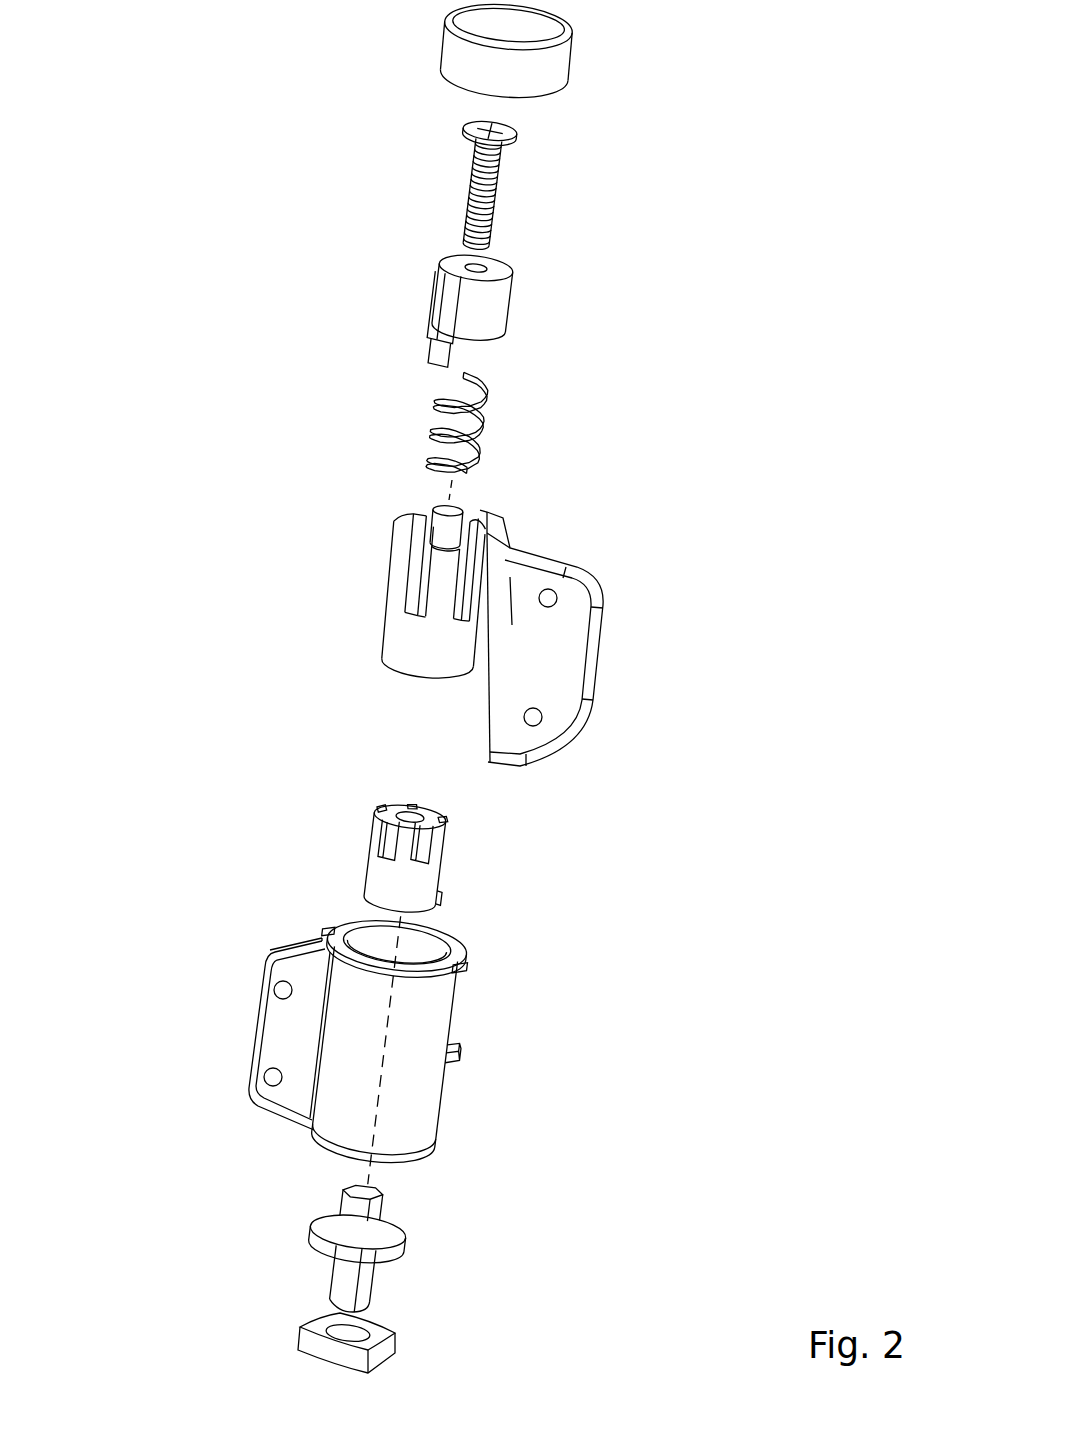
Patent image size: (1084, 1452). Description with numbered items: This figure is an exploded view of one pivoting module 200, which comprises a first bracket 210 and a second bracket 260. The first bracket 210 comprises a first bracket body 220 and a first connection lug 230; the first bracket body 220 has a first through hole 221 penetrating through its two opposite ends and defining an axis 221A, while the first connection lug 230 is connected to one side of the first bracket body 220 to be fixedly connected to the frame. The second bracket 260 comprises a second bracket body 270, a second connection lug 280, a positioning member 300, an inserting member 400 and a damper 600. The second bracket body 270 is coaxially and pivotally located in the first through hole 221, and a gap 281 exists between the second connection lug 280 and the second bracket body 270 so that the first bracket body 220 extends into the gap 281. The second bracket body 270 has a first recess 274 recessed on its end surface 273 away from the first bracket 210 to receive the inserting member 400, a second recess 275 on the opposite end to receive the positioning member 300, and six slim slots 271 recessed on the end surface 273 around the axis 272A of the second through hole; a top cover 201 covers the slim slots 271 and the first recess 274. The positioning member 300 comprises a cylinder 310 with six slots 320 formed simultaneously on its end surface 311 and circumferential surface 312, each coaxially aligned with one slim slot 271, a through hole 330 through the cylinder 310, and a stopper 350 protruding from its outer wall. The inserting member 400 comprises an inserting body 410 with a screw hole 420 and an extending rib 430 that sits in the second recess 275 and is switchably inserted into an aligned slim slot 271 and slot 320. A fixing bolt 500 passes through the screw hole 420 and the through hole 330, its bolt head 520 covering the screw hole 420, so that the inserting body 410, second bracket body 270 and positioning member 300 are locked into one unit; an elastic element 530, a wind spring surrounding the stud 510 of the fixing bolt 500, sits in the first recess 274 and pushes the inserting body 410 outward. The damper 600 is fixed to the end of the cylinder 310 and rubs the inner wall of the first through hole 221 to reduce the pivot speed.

The pivoting module 200 is at (160, 54).
The top cover 201 is at (450, 53).
The fixing bolt 500 is at (424, 182).
The bolt head 520 is at (460, 132).
The stud 510 is at (388, 147).
The inserting member 400 is at (563, 305).
The inserting body 410 is at (497, 291).
The screw hole 420 is at (489, 256).
The extending rib 430 is at (463, 336).
The elastic element 530 is at (440, 410).
The second bracket 260 is at (524, 702).
The second bracket body 270 is at (491, 600).
The slim slots 271 is at (449, 605).
The axis of the second through hole 272A is at (452, 498).
The end surface 273 is at (478, 522).
The first recess 274 is at (434, 512).
The second recess 275 is at (389, 682).
The second connection lug 280 is at (589, 629).
The gap 281 is at (495, 655).
The positioning member 300 is at (488, 848).
The cylinder 310 is at (427, 880).
The end surface 311 is at (412, 805).
The circumferential surface 312 is at (376, 886).
The slots 320 is at (439, 850).
The through hole 330 is at (424, 807).
The stopper 350 is at (440, 900).
The first bracket 210 is at (293, 1047).
The first bracket body 220 is at (324, 1047).
The first through hole 221 is at (363, 938).
The axis of the first through hole 221A is at (372, 1142).
The first connection lug 230 is at (292, 1010).
The damper 600 is at (390, 1227).